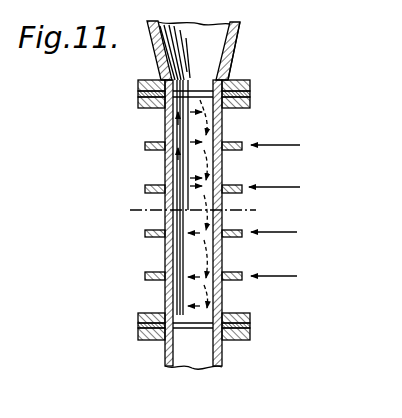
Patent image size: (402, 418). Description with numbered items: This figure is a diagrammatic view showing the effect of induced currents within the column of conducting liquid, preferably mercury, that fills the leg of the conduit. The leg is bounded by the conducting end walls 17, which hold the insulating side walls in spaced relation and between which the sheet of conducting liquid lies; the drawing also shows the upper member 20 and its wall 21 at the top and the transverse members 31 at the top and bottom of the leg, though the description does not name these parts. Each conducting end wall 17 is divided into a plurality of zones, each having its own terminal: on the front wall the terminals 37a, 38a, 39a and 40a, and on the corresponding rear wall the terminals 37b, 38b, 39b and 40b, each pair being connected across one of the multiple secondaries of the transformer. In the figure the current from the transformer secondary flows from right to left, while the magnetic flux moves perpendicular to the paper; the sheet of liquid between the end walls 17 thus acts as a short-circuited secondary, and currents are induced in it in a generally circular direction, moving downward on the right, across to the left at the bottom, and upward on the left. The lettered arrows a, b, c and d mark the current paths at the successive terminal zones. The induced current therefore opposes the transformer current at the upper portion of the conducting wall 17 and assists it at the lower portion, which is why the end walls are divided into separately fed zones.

The funnel 20 is at (155, 58).
The funnel wall 21 is at (233, 52).
The conducting end wall 17 is at (164, 112).
The flange 31 is at (252, 90).
The terminal 37a is at (243, 144).
The terminal 38a is at (243, 186).
The terminal 39a is at (243, 232).
The terminal 40a is at (243, 274).
The terminal 37b is at (145, 147).
The terminal 38b is at (145, 189).
The terminal 39b is at (145, 233).
The terminal 40b is at (145, 276).
The flow arrow a is at (284, 143).
The flow arrow b is at (282, 186).
The flow arrow c is at (282, 233).
The flow arrow d is at (282, 274).